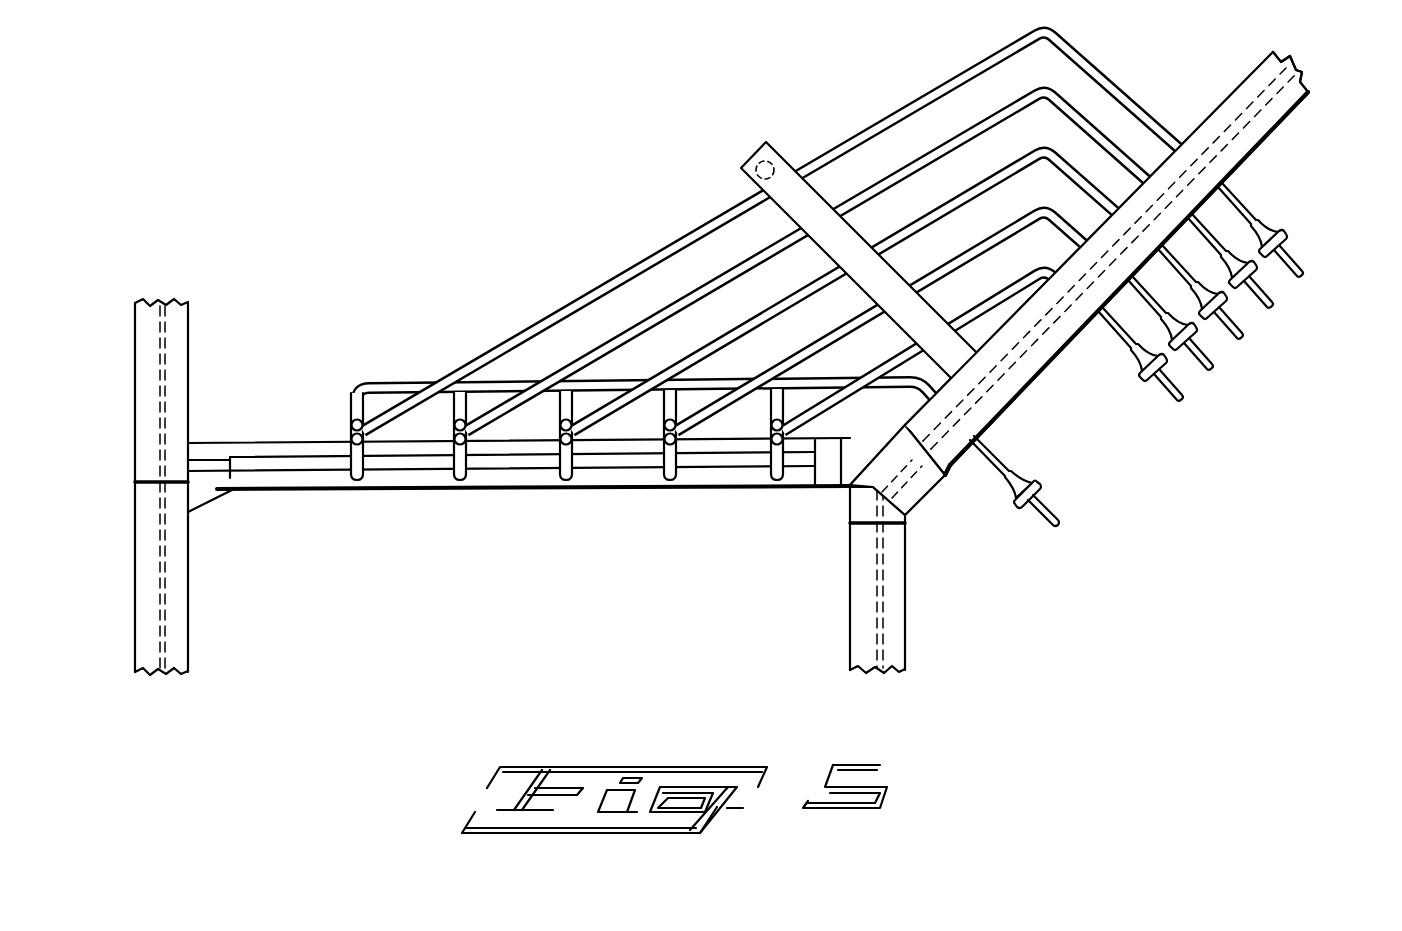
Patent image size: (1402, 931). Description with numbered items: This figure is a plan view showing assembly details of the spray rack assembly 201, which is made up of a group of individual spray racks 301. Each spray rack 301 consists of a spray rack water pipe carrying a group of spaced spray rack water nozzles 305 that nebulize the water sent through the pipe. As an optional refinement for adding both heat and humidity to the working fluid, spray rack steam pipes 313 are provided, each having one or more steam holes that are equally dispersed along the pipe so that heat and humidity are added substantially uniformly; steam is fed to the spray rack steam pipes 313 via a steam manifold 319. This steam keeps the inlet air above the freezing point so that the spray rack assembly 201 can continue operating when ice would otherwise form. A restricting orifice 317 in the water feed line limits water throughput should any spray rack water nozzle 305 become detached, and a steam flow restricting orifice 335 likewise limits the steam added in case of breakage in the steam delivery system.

The spray rack assembly 201 is at (748, 374).
The spray rack 301 is at (347, 439).
The spray rack water nozzle 305 is at (785, 492).
The spray rack steam pipe 313 is at (504, 410).
The restricting orifice 317 is at (1288, 243).
The steam manifold 319 is at (708, 256).
The steam flow restricting orifice 335 is at (1047, 480).